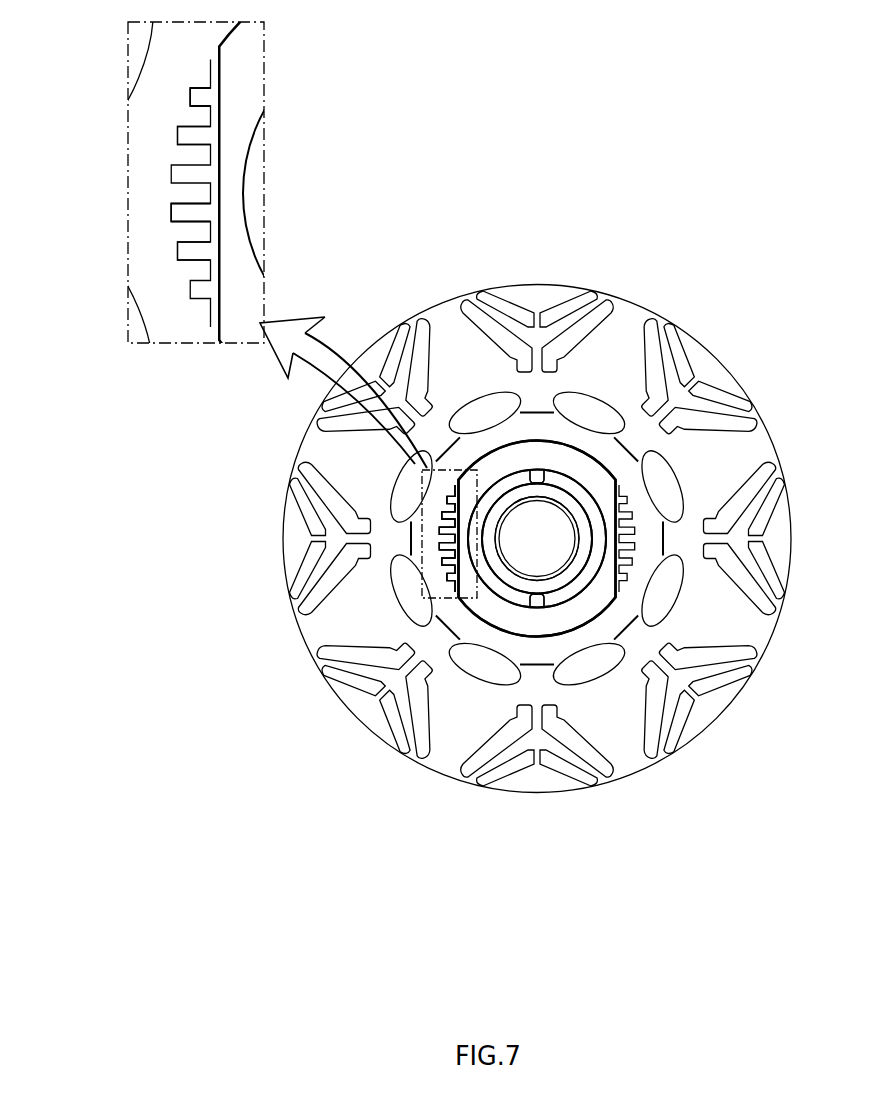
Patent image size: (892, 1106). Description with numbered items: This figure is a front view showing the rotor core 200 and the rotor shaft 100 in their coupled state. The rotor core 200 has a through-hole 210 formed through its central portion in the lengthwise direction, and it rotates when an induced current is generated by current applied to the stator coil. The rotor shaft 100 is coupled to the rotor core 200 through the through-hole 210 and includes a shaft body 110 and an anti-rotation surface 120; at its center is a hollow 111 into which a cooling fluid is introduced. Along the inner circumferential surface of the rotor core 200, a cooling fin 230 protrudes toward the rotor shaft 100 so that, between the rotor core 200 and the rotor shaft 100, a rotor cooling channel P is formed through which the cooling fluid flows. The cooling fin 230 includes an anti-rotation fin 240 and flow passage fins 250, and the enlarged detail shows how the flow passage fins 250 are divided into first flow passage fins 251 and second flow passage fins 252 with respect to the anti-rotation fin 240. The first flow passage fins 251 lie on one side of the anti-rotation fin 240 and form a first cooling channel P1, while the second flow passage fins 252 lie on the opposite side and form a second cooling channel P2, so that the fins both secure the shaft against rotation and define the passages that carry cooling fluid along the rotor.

The rotor shaft 100 is at (675, 260).
The shaft body 110 is at (581, 468).
The hollow 111 is at (531, 509).
The anti-rotation surface 120 is at (423, 471).
The rotor core 200 is at (755, 620).
The through-hole 210 is at (583, 603).
The cooling fin 230 is at (226, 632).
The anti-rotation fin 240 is at (453, 539).
The flow passage fins 250 is at (447, 547).
The first flow passage fins 251 is at (212, 117).
The second flow passage fins 252 is at (212, 232).
The rotor cooling channel P is at (70, 122).
The first cooling channel P1 is at (212, 140).
The second cooling channel P2 is at (212, 252).